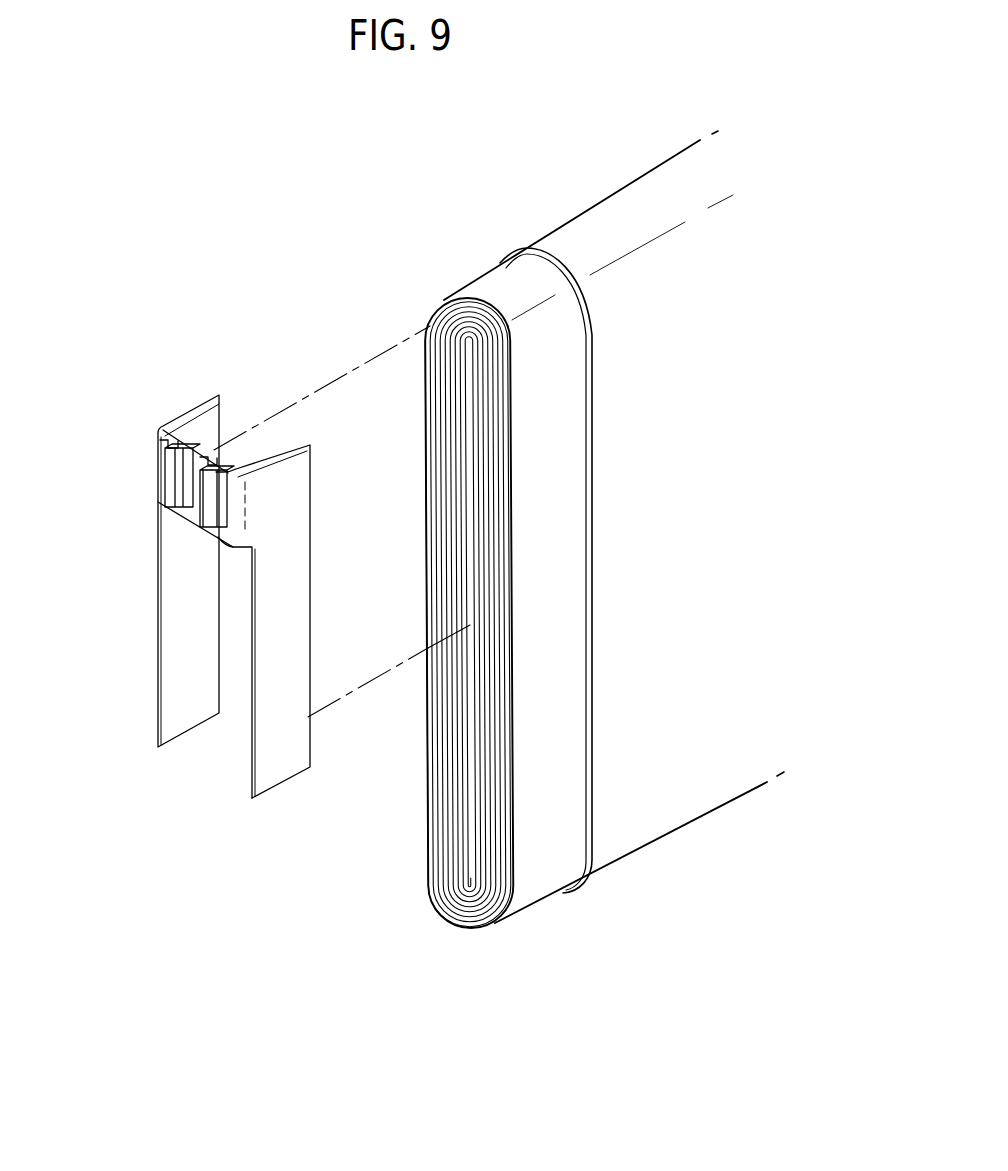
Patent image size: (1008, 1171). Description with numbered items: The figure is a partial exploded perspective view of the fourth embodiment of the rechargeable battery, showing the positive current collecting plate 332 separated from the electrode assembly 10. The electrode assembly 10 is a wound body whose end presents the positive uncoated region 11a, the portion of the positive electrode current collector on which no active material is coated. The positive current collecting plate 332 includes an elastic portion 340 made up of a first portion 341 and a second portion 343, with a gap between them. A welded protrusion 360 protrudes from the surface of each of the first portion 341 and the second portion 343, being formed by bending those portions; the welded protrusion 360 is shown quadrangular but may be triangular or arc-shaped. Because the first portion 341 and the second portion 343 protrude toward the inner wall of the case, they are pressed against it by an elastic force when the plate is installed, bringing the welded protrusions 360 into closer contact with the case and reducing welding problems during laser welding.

The electrode assembly 10 is at (607, 215).
The positive uncoated region 11a is at (482, 287).
The positive current collecting plate 332 is at (172, 542).
The elastic portion 340 is at (123, 451).
The first portion 341 is at (161, 441).
The second portion 343 is at (161, 470).
The welded protrusion 360 is at (235, 496).